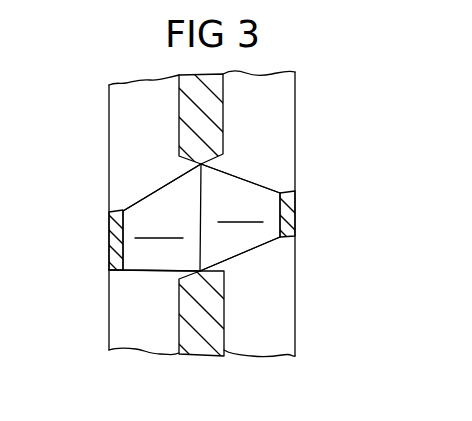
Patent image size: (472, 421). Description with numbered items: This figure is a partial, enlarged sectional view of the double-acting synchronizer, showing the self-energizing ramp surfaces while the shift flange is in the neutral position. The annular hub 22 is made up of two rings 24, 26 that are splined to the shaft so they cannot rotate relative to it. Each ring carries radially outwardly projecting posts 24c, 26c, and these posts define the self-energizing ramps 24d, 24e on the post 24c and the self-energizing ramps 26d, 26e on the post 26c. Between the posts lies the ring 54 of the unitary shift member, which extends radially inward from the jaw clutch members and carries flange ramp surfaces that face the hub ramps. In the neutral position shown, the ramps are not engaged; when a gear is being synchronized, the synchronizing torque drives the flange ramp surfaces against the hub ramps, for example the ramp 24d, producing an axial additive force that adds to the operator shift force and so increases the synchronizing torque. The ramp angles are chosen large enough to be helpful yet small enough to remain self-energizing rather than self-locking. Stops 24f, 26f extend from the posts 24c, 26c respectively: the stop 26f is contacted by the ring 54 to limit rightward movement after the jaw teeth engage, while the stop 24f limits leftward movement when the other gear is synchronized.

The annular hub 22 is at (330, 77).
The ring 24 is at (90, 105).
The ring 26 is at (318, 125).
The post 24c is at (162, 217).
The post 26c is at (240, 217).
The self-energizing ramp 24e is at (142, 198).
The stop 24f is at (111, 241).
The self-energizing ramp 24d is at (137, 273).
The self-energizing ramp 26e is at (281, 191).
The stop 26f is at (296, 208).
The self-energizing ramp 26d is at (266, 243).
The ring 54 is at (247, 333).